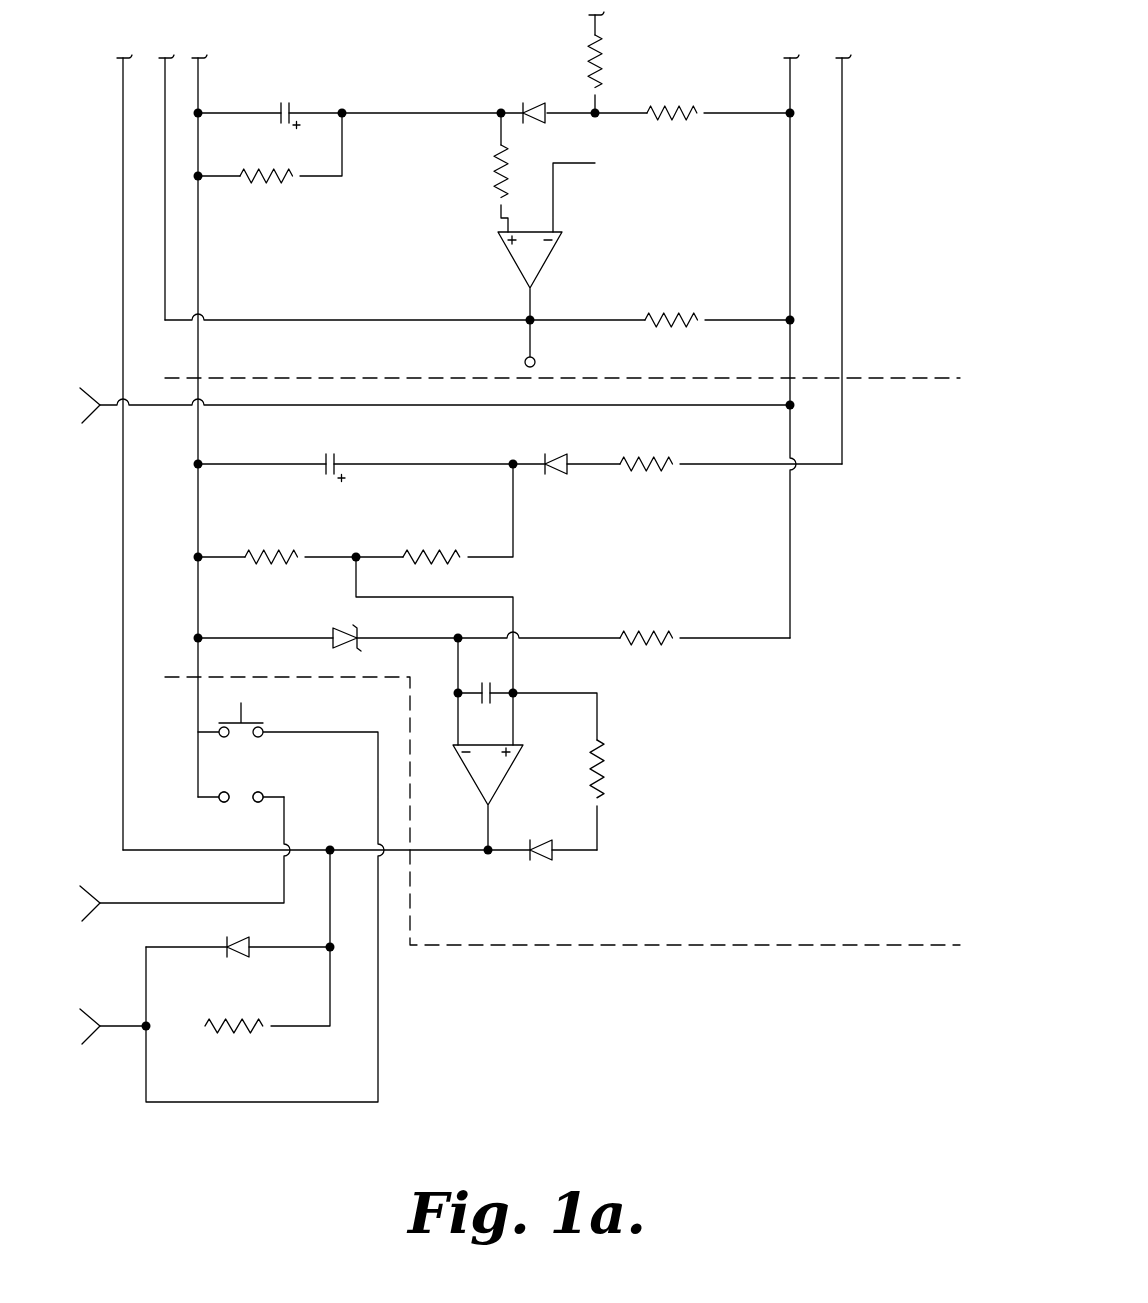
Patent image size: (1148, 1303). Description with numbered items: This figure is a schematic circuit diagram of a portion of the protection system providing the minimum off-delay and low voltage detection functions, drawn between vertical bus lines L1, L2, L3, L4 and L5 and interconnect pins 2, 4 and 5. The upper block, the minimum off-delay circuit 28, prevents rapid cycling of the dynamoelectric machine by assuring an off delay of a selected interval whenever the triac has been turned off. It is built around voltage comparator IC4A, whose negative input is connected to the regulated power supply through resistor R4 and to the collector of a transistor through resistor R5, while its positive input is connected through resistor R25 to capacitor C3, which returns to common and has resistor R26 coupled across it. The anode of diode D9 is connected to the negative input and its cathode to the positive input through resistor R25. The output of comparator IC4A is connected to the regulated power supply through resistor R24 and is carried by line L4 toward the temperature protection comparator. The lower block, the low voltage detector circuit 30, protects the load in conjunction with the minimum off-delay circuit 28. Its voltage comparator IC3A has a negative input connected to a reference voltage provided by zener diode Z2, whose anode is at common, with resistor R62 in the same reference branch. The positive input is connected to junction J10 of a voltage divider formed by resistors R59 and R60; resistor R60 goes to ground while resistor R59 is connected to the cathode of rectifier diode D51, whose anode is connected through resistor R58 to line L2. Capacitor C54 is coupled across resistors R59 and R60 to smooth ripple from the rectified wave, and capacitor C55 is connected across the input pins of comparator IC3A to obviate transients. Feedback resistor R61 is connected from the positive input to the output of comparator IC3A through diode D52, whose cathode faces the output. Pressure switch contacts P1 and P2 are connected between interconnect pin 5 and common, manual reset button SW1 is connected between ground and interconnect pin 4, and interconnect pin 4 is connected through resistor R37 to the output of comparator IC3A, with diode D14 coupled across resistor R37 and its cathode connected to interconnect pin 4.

The line L1 is at (198, 603).
The line L2 is at (842, 205).
The line L3 is at (790, 157).
The line L4 is at (177, 323).
The line L5 is at (123, 612).
The minimum off-delay circuit 28 is at (858, 292).
The low voltage detector circuit 30 is at (828, 654).
The interconnect pin 2 is at (433, 405).
The interconnect pin 4 is at (111, 1026).
The interconnect pin 5 is at (181, 859).
The capacitor C3 is at (293, 97).
The resistor R26 is at (257, 200).
The resistor R25 is at (474, 171).
The resistor R5 is at (572, 50).
The diode D9 is at (532, 127).
The resistor R4 is at (675, 92).
The voltage comparator IC4A is at (519, 290).
The resistor R24 is at (670, 296).
The capacitor C54 is at (321, 451).
The rectifier diode D51 is at (550, 451).
The resistor R58 is at (646, 450).
The resistor R60 is at (274, 536).
The junction J10 is at (372, 541).
The resistor R59 is at (431, 536).
The zener diode Z2 is at (378, 623).
The resistor R62 is at (646, 661).
The capacitor C55 is at (487, 675).
The voltage comparator IC3A is at (473, 784).
The feedback resistor R61 is at (622, 769).
The diode D52 is at (554, 876).
The manual reset button SW1 is at (240, 752).
The pressure switch contact P1 is at (251, 812).
The pressure switch contact P2 is at (215, 814).
The diode D14 is at (239, 935).
The resistor R37 is at (234, 1049).